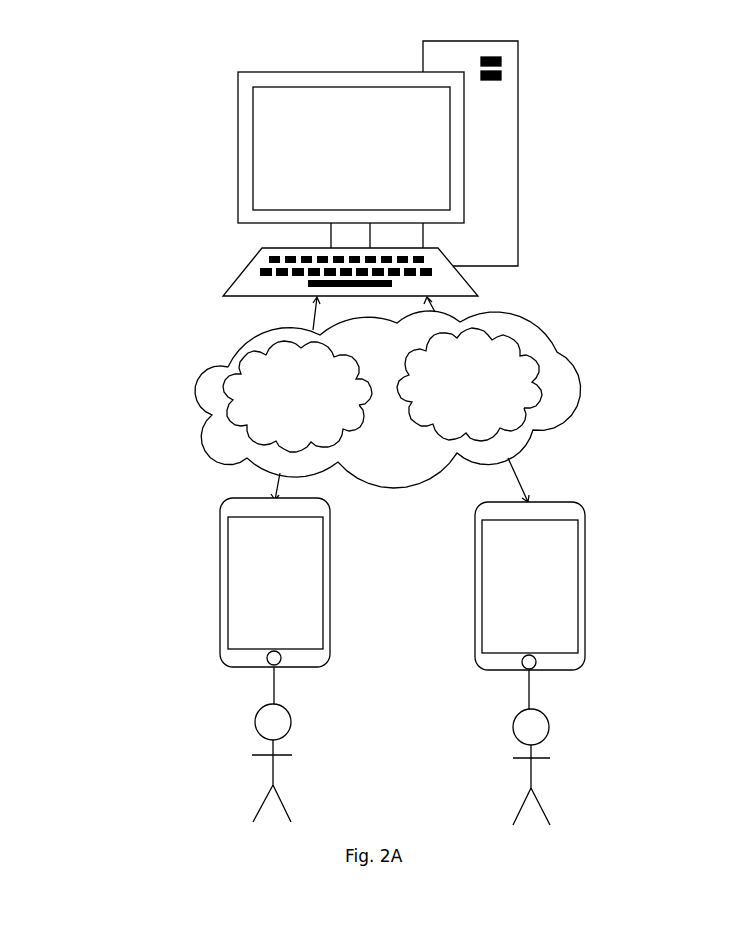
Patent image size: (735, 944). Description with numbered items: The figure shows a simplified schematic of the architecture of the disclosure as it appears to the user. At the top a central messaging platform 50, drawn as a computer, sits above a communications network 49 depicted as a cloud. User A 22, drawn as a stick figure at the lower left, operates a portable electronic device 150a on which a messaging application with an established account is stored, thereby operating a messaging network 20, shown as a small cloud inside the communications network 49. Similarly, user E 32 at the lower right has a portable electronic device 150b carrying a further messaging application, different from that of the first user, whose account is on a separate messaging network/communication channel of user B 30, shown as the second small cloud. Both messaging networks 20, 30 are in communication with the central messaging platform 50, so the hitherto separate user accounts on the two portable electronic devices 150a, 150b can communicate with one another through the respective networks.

The central messaging platform 50 is at (518, 187).
The communications network 49 is at (520, 313).
The messaging network 20 is at (223, 392).
The messaging network/communication channel of user B 30 is at (542, 377).
The portable electronic device 150a is at (216, 596).
The portable electronic device 150b is at (595, 592).
The user A 22 is at (290, 722).
The user E 32 is at (550, 725).